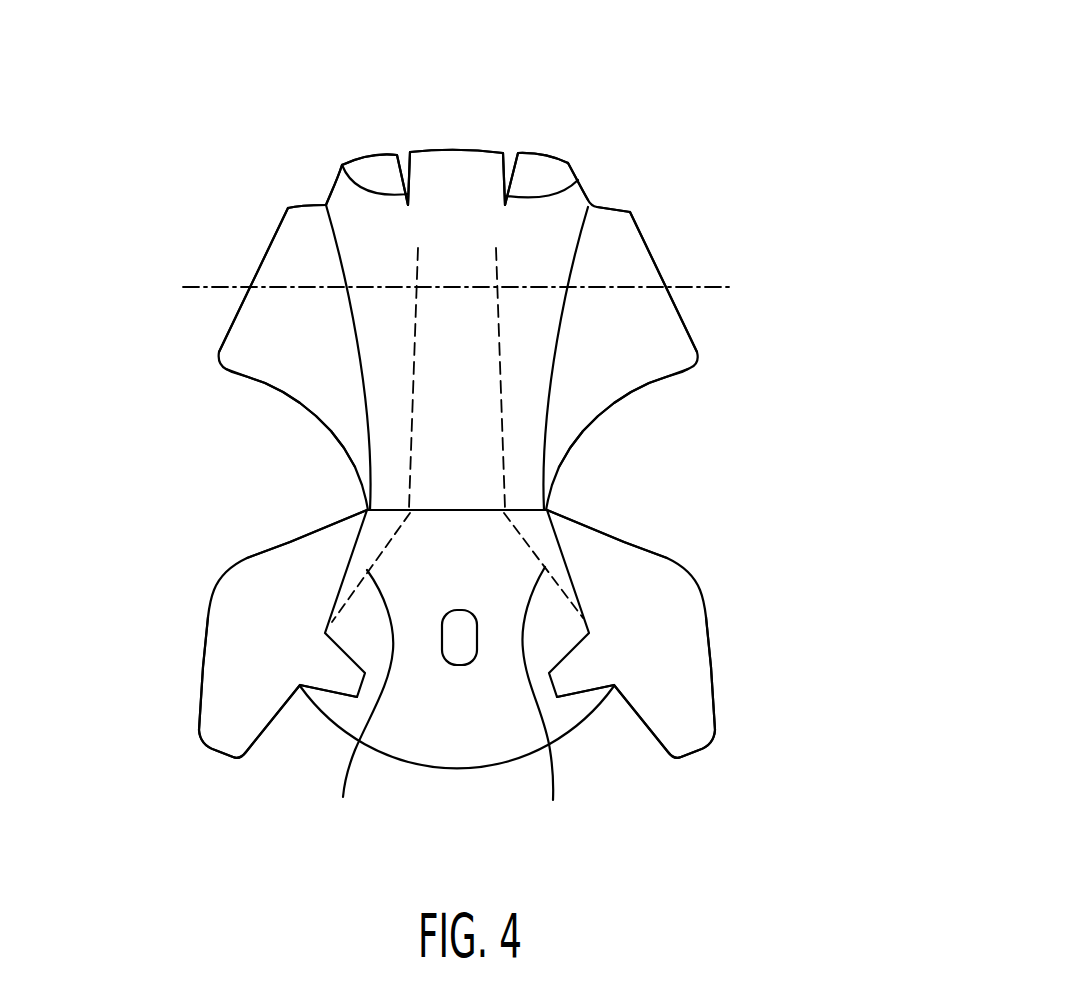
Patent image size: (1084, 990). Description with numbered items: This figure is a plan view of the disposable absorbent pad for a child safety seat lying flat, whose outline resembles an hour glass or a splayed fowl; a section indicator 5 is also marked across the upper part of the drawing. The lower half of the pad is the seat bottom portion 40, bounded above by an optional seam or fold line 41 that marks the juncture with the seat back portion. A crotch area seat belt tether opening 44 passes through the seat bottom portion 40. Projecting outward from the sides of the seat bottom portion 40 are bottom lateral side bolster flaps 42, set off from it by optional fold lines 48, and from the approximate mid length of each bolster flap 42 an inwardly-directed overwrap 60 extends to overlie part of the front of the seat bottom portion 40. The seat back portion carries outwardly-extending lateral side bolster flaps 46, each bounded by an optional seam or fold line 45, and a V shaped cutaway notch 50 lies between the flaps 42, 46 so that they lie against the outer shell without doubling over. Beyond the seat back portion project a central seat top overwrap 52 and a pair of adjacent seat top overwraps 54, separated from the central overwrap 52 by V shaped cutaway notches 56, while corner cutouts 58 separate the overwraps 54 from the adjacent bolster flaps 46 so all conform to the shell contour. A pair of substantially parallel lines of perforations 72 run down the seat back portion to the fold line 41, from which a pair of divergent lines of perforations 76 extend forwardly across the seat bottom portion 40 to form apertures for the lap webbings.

The section line 5- 5 is at (183, 221).
The seat bottom portion 40 is at (453, 563).
The seam or fold line 41 is at (447, 510).
The bottom lateral side bolster flaps 42 is at (233, 623).
The crotch area seat belt tether opening 44 is at (458, 663).
The seam or fold line 45 is at (347, 312).
The lateral side bolster flaps 46 is at (280, 353).
The fold lines 48 is at (343, 575).
The V shaped cutaway notch 50 is at (298, 475).
The central seat top overwrap 52 is at (456, 163).
The adjacent seat top overwraps 54 is at (375, 168).
The V shaped cutaway notches 56 is at (342, 165).
The corner cutouts 58 is at (312, 181).
The inwardly-directed overwrap 60 is at (330, 673).
The lines of perforations 72 is at (413, 380).
The divergent lines of perforations 76 is at (343, 797).